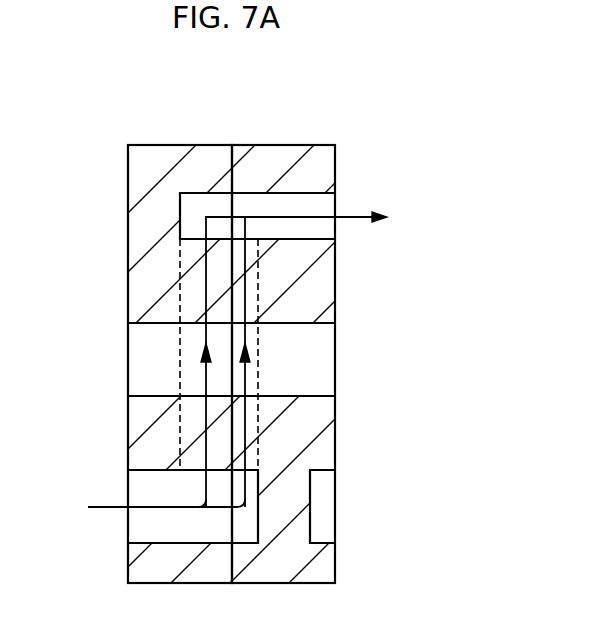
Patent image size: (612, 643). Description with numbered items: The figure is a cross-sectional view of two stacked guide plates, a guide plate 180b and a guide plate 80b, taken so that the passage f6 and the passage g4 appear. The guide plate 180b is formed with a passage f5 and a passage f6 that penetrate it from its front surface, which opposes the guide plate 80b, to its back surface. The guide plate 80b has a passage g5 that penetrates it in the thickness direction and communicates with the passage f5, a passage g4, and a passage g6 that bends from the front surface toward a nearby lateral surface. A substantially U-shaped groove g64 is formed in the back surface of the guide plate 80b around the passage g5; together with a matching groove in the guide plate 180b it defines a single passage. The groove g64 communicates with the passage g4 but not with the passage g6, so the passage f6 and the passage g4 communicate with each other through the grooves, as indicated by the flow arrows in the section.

The guide plate 180b is at (171, 145).
The guide plate 80b is at (277, 145).
The passage g4 is at (324, 204).
The passage g5 is at (327, 353).
The passage g6 is at (327, 505).
The groove g64 is at (180, 288).
The passage f5 is at (162, 357).
The passage f6 is at (162, 527).